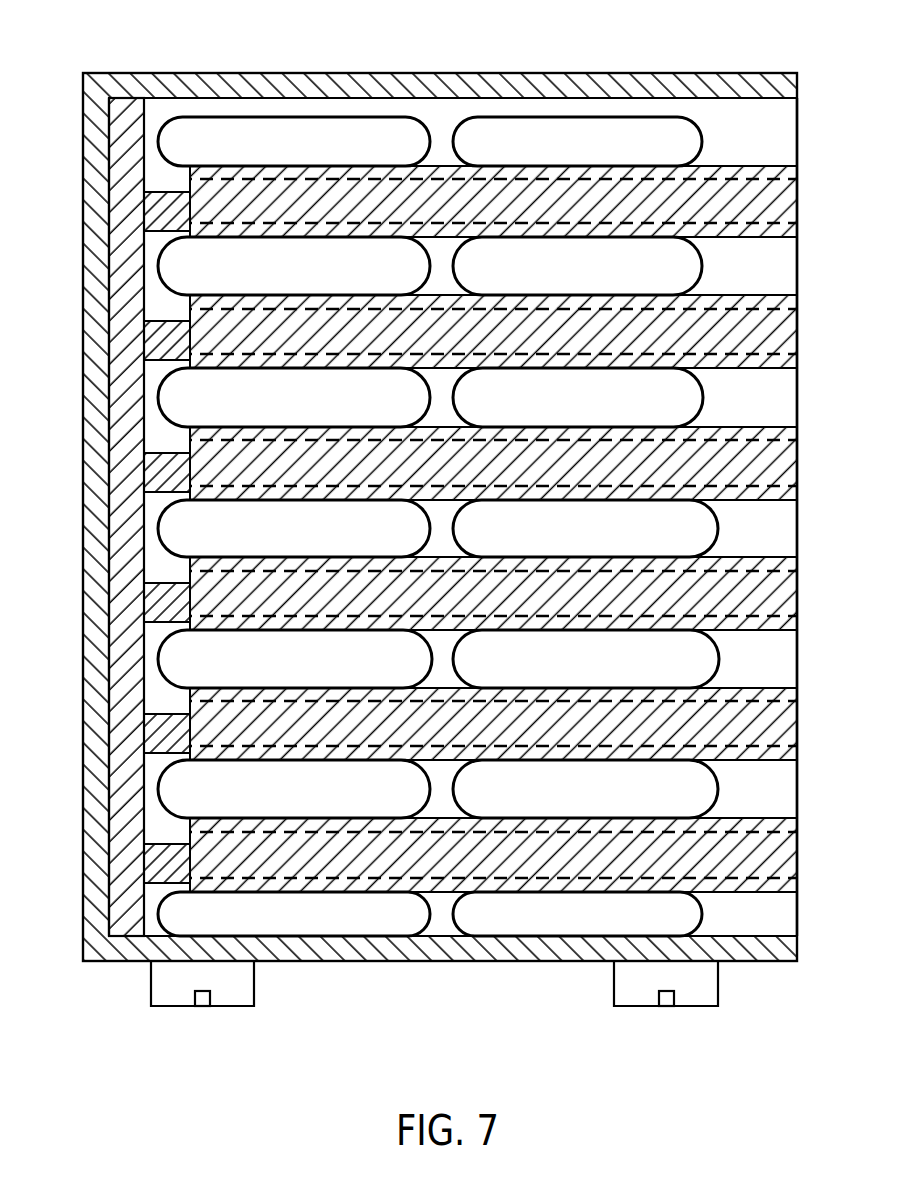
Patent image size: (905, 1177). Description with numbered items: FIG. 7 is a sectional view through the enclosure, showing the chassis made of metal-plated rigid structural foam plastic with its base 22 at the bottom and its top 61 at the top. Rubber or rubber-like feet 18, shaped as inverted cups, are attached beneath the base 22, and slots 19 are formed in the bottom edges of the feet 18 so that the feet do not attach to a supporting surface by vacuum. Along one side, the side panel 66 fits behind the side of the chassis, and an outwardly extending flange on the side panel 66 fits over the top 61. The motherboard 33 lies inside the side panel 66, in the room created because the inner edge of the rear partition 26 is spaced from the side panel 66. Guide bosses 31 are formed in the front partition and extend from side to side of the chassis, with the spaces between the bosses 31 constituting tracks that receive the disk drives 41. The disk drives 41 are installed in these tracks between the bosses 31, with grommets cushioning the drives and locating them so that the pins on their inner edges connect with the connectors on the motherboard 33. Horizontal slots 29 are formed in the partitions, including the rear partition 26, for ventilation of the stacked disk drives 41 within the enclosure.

The feet 18 is at (250, 985).
The slots 19 is at (200, 1007).
The base 22 is at (424, 955).
The rear partition 26 is at (507, 473).
The horizontal slots 29 is at (536, 125).
The guide bosses 31 is at (770, 137).
The motherboard 33 is at (128, 540).
The disk drives 41 is at (765, 205).
The top 61 is at (440, 84).
The side panel 66 is at (97, 430).